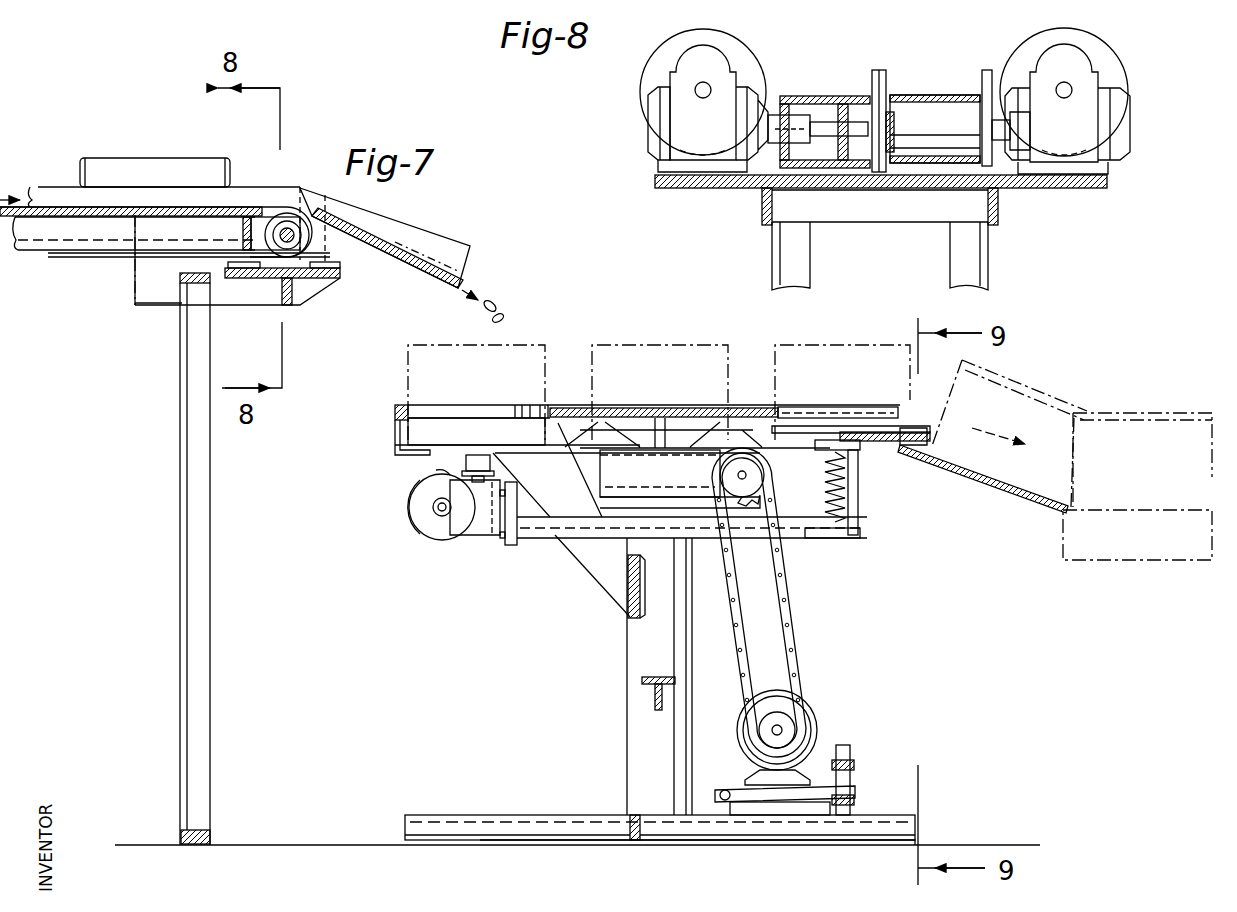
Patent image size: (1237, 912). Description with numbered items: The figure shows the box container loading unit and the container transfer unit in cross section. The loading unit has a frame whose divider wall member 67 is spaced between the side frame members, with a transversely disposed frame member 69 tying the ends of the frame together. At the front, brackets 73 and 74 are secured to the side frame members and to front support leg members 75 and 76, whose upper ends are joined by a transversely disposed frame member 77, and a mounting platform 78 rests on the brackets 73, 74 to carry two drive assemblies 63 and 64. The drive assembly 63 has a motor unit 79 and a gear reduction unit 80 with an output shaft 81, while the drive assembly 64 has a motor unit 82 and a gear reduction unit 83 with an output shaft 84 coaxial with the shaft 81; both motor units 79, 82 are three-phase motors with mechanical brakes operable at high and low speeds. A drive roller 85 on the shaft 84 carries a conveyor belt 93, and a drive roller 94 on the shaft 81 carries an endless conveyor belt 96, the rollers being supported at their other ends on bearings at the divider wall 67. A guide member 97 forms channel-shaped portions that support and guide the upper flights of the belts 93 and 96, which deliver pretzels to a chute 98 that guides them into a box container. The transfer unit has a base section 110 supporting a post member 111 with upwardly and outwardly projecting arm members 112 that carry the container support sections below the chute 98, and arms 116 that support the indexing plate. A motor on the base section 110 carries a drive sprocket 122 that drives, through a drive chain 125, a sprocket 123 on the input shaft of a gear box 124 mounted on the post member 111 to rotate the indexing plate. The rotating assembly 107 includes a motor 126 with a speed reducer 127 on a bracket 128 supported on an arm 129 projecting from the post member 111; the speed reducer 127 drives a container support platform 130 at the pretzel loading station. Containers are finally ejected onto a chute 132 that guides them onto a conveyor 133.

In FIG. 8, the drive assembly 63 is at (640, 82).
In FIG. 8, the drive assembly 64 is at (1128, 82).
In FIG. 8, the divider wall member 67 is at (892, 104).
In FIG. 7, the transversely disposed frame member 69 is at (240, 232).
In FIG. 8, the bracket 73 is at (766, 210).
In FIG. 8, the bracket 74 is at (1000, 212).
In FIG. 7, the bracket 74 is at (135, 288).
In FIG. 8, the front support leg member 75 is at (772, 276).
In FIG. 8, the front support leg member 76 is at (990, 272).
In FIG. 7, the front support leg member 76 is at (212, 578).
In FIG. 8, the transversely disposed frame member 77 is at (865, 224).
In FIG. 7, the transversely disposed frame member 77 is at (180, 292).
In FIG. 8, the mounting platform 78 is at (1078, 188).
In FIG. 7, the mounting platform 78 is at (314, 278).
In FIG. 8, the motor unit 79 is at (643, 96).
In FIG. 8, the gear reduction unit 80 is at (678, 136).
In FIG. 8, the output shaft 81 is at (760, 128).
In FIG. 8, the motor unit 82 is at (1114, 56).
In FIG. 7, the motor unit 82 is at (175, 158).
In FIG. 8, the gear reduction unit 83 is at (1086, 122).
In FIG. 8, the output shaft 84 is at (1000, 132).
In FIG. 8, the drive roller 85 is at (932, 118).
In FIG. 8, the conveyor belt 93 is at (987, 96).
In FIG. 7, the conveyor belt 93 is at (55, 258).
In FIG. 8, the drive roller 94 is at (806, 96).
In FIG. 8, the endless conveyor belt 96 is at (845, 100).
In FIG. 8, the guide member 97 is at (878, 70).
In FIG. 7, the chute 98 is at (460, 250).
In FIG. 7, the rotating assembly 107 is at (412, 515).
In FIG. 7, the base section 110 is at (520, 815).
In FIG. 7, the post member 111 is at (634, 654).
In FIG. 7, the arm members 112 is at (596, 570).
In FIG. 7, the arms 116 is at (697, 432).
In FIG. 7, the drive sprocket 122 is at (780, 730).
In FIG. 7, the sprocket 123 is at (752, 492).
In FIG. 7, the gear box 124 is at (796, 492).
In FIG. 7, the drive chain 125 is at (792, 618).
In FIG. 7, the motor 126 is at (440, 482).
In FIG. 7, the speed reducer 127 is at (445, 540).
In FIG. 7, the bracket 128 is at (505, 545).
In FIG. 7, the arm 129 is at (535, 538).
In FIG. 7, the container support platform 130 is at (430, 440).
In FIG. 7, the chute 132 is at (990, 490).
In FIG. 7, the conveyor 133 is at (1095, 560).